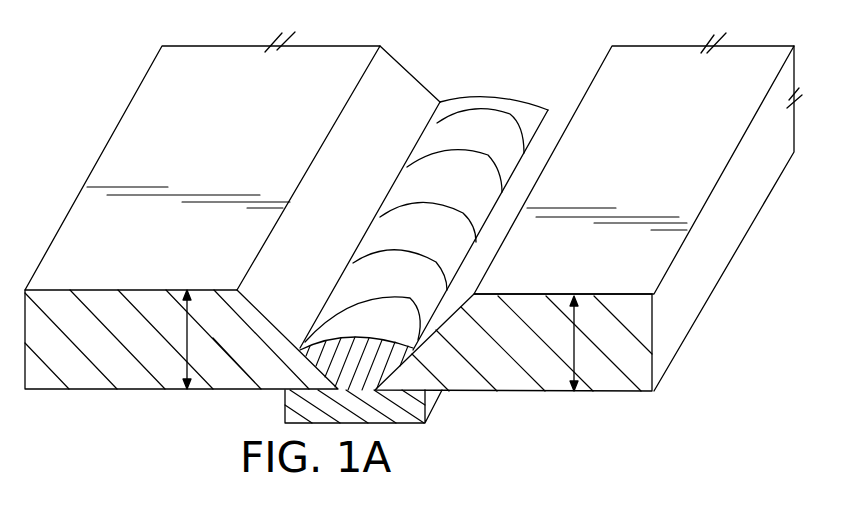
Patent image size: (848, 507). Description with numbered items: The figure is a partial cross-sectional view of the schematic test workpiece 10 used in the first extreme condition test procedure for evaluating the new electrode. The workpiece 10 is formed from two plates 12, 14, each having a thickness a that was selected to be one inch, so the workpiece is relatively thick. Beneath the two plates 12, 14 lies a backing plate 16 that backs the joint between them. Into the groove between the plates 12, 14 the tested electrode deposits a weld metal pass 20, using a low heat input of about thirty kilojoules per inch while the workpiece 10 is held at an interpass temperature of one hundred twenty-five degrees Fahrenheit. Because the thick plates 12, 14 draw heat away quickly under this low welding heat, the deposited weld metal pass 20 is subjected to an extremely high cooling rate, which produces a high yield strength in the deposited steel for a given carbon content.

The workpiece 10 is at (82, 98).
The plate 12 is at (82, 372).
The plate 14 is at (604, 376).
The backing plate 16 is at (417, 410).
The weld metal pass 20 is at (481, 121).